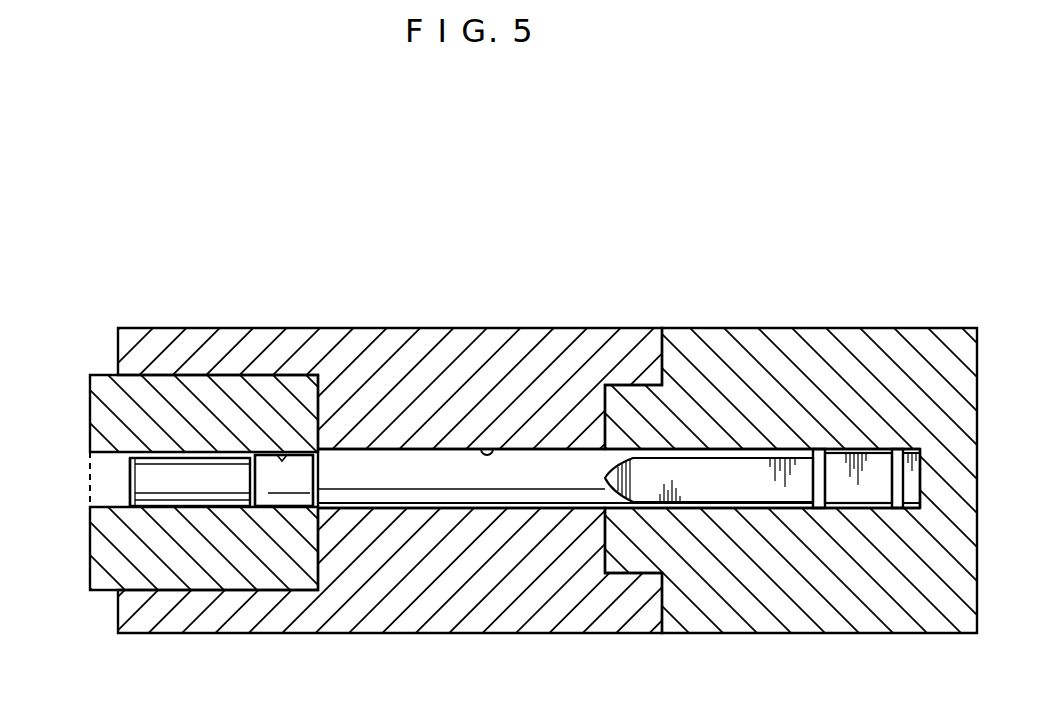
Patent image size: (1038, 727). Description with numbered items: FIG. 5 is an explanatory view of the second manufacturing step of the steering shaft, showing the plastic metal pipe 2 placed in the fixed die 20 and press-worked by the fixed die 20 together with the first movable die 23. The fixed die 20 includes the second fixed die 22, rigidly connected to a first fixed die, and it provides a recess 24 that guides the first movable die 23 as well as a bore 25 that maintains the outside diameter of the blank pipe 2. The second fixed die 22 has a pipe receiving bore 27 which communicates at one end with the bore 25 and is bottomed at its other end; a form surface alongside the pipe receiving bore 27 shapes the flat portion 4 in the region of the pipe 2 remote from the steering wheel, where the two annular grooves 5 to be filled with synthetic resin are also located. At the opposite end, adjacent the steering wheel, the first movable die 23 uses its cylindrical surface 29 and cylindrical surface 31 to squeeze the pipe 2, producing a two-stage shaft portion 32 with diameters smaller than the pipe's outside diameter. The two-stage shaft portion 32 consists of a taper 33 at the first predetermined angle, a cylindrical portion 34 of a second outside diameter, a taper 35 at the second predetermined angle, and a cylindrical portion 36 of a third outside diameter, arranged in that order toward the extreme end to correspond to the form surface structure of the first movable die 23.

The fixed die 20 is at (590, 298).
The second fixed die 22 is at (766, 330).
The first movable die 23 is at (193, 578).
The recess 24 is at (214, 376).
The bore 25 is at (495, 449).
The pipe receiving bore 27 is at (699, 449).
The cylindrical surface 29 is at (283, 458).
The cylindrical surface 31 is at (103, 477).
The two-stage shaft portion 32 is at (207, 450).
The taper 33 is at (318, 480).
The cylindrical portion 34 is at (288, 504).
The taper 35 is at (248, 506).
The cylindrical portion 36 is at (166, 498).
The plastic metal pipe 2 is at (500, 508).
The flat portion 4 is at (740, 504).
The annular grooves 5 is at (826, 490).